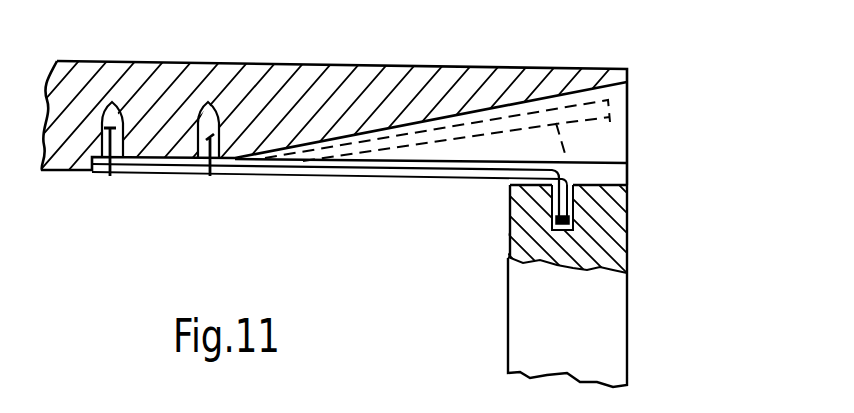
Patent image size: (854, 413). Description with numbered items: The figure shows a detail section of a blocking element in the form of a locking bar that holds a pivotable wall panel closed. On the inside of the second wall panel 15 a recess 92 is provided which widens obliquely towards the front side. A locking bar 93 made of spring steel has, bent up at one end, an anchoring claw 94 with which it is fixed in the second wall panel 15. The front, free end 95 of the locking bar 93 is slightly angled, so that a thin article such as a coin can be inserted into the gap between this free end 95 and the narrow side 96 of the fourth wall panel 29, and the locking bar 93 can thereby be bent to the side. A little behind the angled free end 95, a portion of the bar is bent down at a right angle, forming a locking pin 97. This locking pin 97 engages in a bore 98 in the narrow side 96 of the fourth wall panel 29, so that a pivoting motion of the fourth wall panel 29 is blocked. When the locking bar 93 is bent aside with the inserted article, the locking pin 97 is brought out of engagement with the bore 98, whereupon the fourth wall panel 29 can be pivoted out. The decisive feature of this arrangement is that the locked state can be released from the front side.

The second wall panel 15 is at (320, 72).
The fourth wall panel 29 is at (534, 312).
The recess 92 is at (612, 124).
The locking bar 93 is at (278, 163).
The anchoring claw 94 is at (207, 150).
The free end 95 is at (603, 158).
The narrow side 96 is at (628, 218).
The locking pin 97 is at (562, 204).
The bore 98 is at (568, 222).